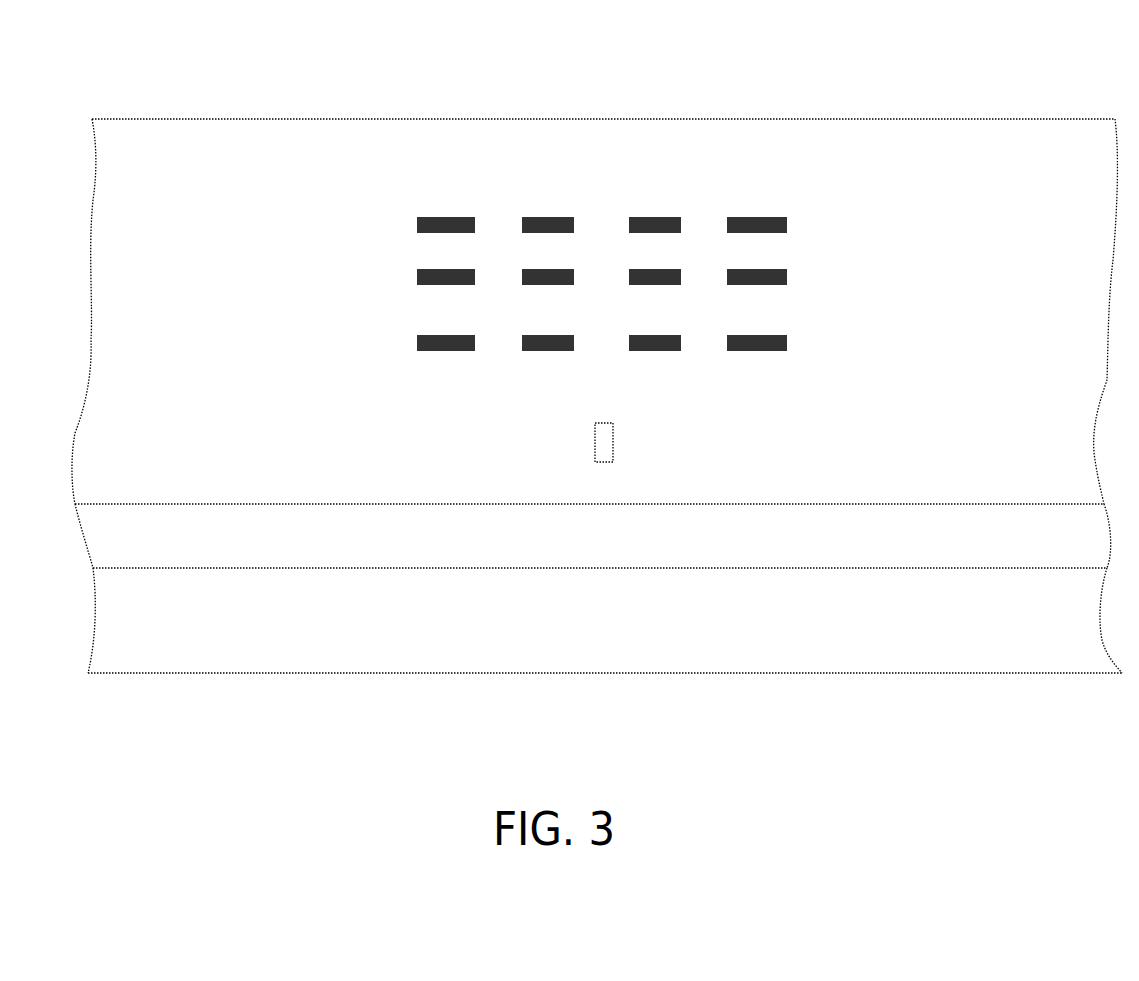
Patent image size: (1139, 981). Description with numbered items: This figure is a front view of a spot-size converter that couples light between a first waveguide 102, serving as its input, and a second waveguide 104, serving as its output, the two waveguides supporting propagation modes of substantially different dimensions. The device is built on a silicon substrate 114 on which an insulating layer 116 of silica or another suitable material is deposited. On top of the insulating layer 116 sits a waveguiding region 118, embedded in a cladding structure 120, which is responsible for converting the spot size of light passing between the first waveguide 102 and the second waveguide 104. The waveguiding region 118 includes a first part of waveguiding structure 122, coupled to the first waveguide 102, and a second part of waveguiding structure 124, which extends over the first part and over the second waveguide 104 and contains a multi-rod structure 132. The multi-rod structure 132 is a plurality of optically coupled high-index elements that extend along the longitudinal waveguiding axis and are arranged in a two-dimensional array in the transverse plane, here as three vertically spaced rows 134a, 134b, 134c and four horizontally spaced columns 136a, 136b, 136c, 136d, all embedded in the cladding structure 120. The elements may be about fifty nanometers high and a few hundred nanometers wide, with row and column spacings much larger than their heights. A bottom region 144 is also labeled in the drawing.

The first waveguide 102 is at (568, 445).
The second waveguide 104 is at (996, 269).
The silicon substrate 114 is at (605, 620).
The insulating layer 116 is at (593, 536).
The waveguiding region 118 is at (192, 490).
The cladding structure 120 is at (595, 311).
The first part of waveguiding structure 122 is at (924, 401).
The second part of waveguiding structure 124 is at (925, 178).
The multi-rod structure 132 is at (405, 328).
The first row of high-index elements 134a is at (651, 341).
The second row of high-index elements 134b is at (651, 268).
The third row of high-index elements 134c is at (651, 215).
The first column of high-index elements 136a is at (447, 256).
The second column of high-index elements 136b is at (554, 257).
The third column of high-index elements 136c is at (658, 257).
The fourth column of high-index elements 136d is at (762, 257).
The bottom surface 144 is at (605, 641).